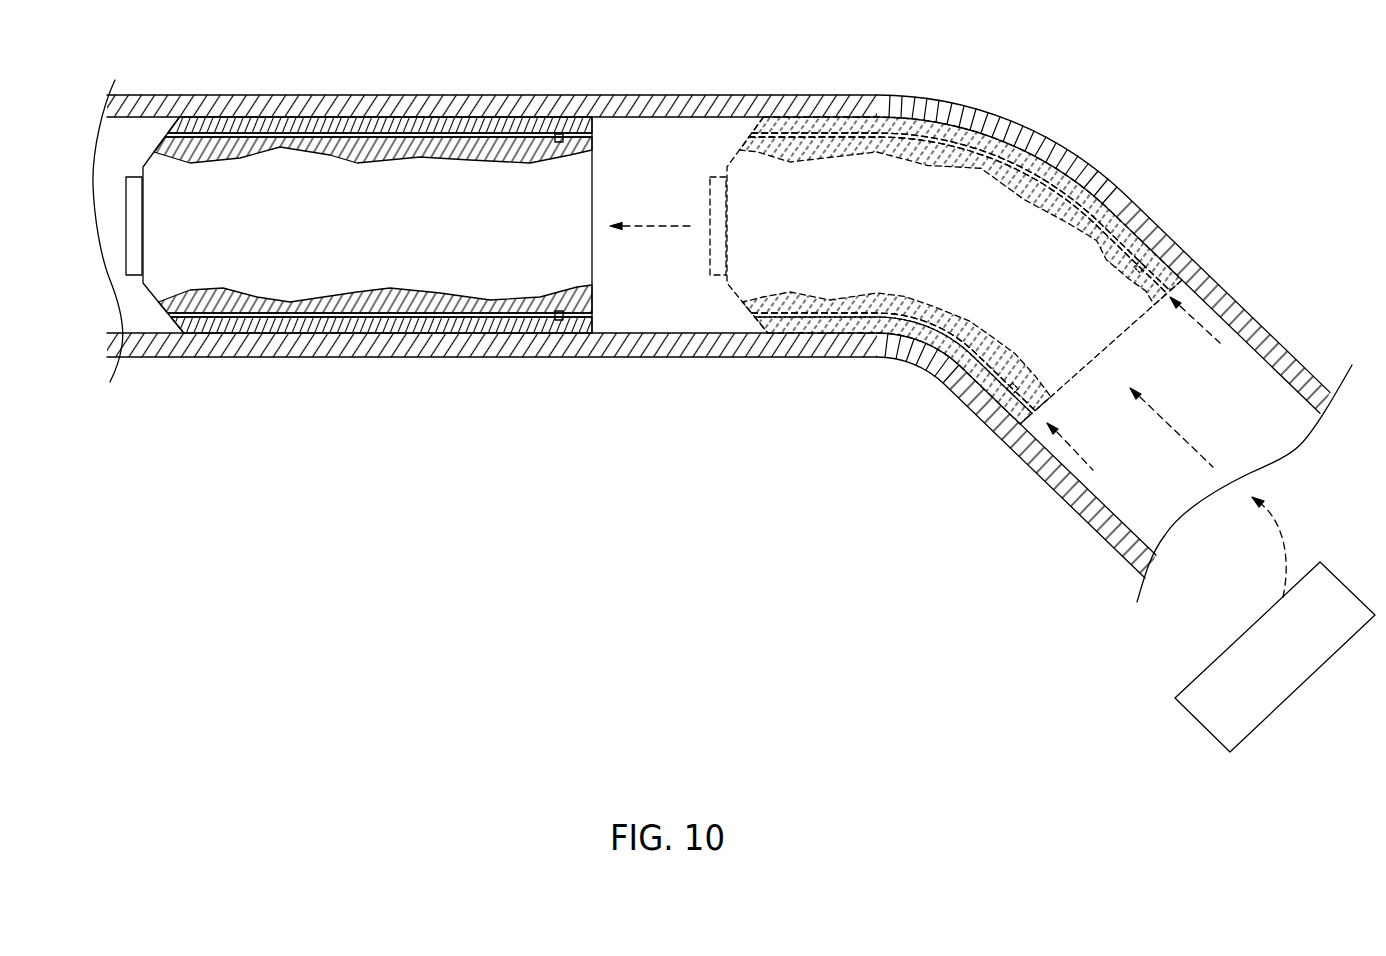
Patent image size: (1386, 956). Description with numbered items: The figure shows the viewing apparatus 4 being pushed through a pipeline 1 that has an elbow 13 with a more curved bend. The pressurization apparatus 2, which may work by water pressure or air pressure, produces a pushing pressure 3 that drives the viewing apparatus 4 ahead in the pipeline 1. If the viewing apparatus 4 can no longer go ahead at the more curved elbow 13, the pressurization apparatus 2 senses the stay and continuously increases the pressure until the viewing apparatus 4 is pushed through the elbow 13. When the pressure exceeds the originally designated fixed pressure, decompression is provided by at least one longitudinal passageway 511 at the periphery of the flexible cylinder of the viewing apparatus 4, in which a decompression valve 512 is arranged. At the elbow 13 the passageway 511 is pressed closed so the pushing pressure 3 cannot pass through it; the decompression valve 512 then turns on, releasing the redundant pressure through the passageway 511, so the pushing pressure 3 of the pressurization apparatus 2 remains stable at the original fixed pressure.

The pipeline 1 is at (748, 89).
The elbow 13 is at (1040, 108).
The viewing apparatus 4 is at (346, 117).
The passageway 511 is at (527, 137).
The decompression valve 512 is at (560, 133).
The pushing pressure 3 is at (1197, 451).
The pressurization apparatus 2 is at (1213, 690).